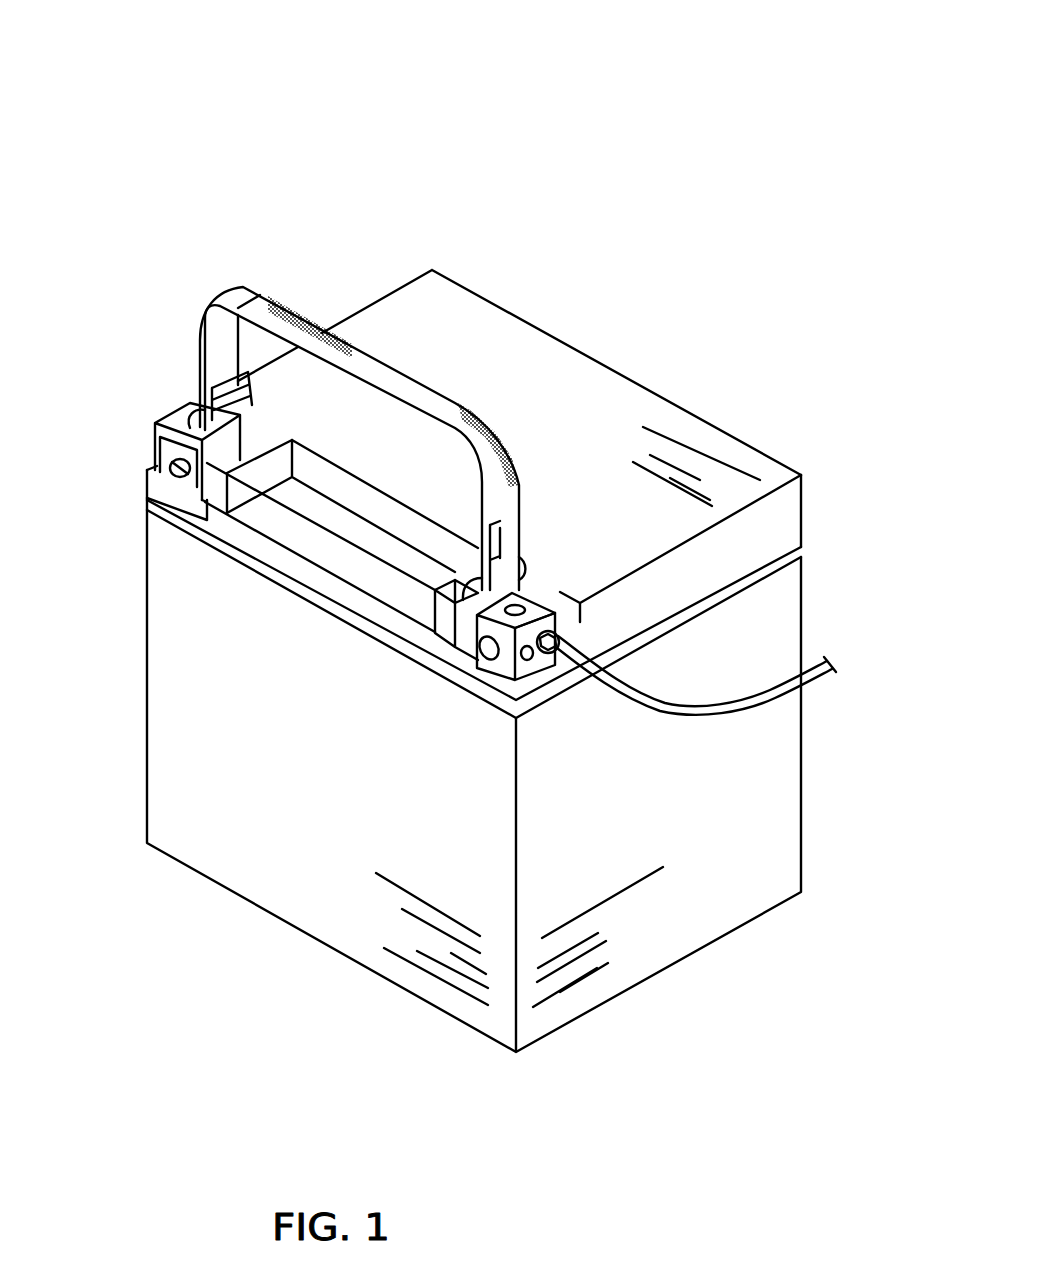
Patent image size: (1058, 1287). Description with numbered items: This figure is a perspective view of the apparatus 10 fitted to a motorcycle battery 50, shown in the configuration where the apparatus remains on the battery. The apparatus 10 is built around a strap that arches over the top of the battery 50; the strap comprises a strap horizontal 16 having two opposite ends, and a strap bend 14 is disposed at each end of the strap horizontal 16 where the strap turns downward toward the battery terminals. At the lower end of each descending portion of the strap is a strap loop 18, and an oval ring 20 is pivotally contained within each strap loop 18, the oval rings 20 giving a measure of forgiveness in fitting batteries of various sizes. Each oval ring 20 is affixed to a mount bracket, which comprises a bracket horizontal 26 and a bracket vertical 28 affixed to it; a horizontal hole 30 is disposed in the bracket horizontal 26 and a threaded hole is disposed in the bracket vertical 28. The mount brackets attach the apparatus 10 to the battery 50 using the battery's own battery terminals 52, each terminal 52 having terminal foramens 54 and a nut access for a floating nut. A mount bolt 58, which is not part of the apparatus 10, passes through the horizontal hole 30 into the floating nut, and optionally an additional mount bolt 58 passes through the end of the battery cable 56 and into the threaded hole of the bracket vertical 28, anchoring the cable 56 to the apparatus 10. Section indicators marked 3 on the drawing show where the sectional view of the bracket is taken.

The apparatus 10 is at (518, 174).
The strap bend 14 is at (217, 320).
The strap horizontal 16 is at (333, 334).
The strap loop 18 is at (222, 387).
The oval ring 20 is at (185, 425).
The bracket horizontal 26 is at (532, 604).
The bracket vertical 28 is at (557, 634).
The horizontal hole 30 is at (552, 600).
The battery 50 is at (700, 412).
The battery terminal 52 is at (203, 500).
The terminal foramen 54 is at (163, 473).
The battery cable 56 is at (745, 708).
The mount bolt 58 is at (553, 650).
The section view indicator 3 is at (498, 532).